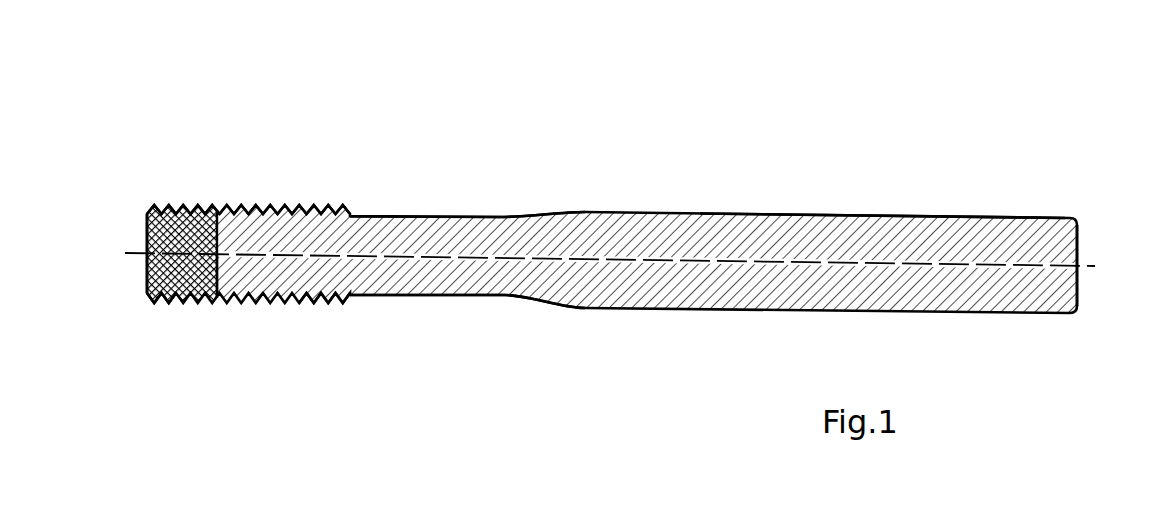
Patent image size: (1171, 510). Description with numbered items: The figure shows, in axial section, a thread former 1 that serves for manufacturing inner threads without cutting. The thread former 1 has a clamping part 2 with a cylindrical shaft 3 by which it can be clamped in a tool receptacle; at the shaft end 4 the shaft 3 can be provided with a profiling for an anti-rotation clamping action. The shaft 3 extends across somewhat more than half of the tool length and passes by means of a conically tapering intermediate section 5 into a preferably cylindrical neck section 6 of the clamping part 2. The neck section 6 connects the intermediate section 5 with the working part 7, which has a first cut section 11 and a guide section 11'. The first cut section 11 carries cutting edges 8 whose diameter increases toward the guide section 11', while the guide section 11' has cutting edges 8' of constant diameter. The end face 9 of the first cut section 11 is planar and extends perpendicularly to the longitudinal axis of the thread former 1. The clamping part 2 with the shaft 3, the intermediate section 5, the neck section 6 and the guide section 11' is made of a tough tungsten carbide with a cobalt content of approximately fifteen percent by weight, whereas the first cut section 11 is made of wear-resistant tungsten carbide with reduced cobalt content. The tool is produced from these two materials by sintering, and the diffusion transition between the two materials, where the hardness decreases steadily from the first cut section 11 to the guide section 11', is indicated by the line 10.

The thread former 1 is at (698, 206).
The clamping part 2 is at (638, 203).
The cylindrical shaft 3 is at (882, 181).
The shaft end 4 is at (1082, 243).
The intermediate section 5 is at (542, 200).
The neck section 6 is at (435, 217).
The working part 7 is at (268, 198).
The cutting edges 8 is at (134, 328).
The cutting edges 8' is at (324, 336).
The end face 9 is at (148, 260).
The line 10 is at (185, 322).
The first cut section 11 is at (190, 167).
The guide section 11' is at (247, 328).